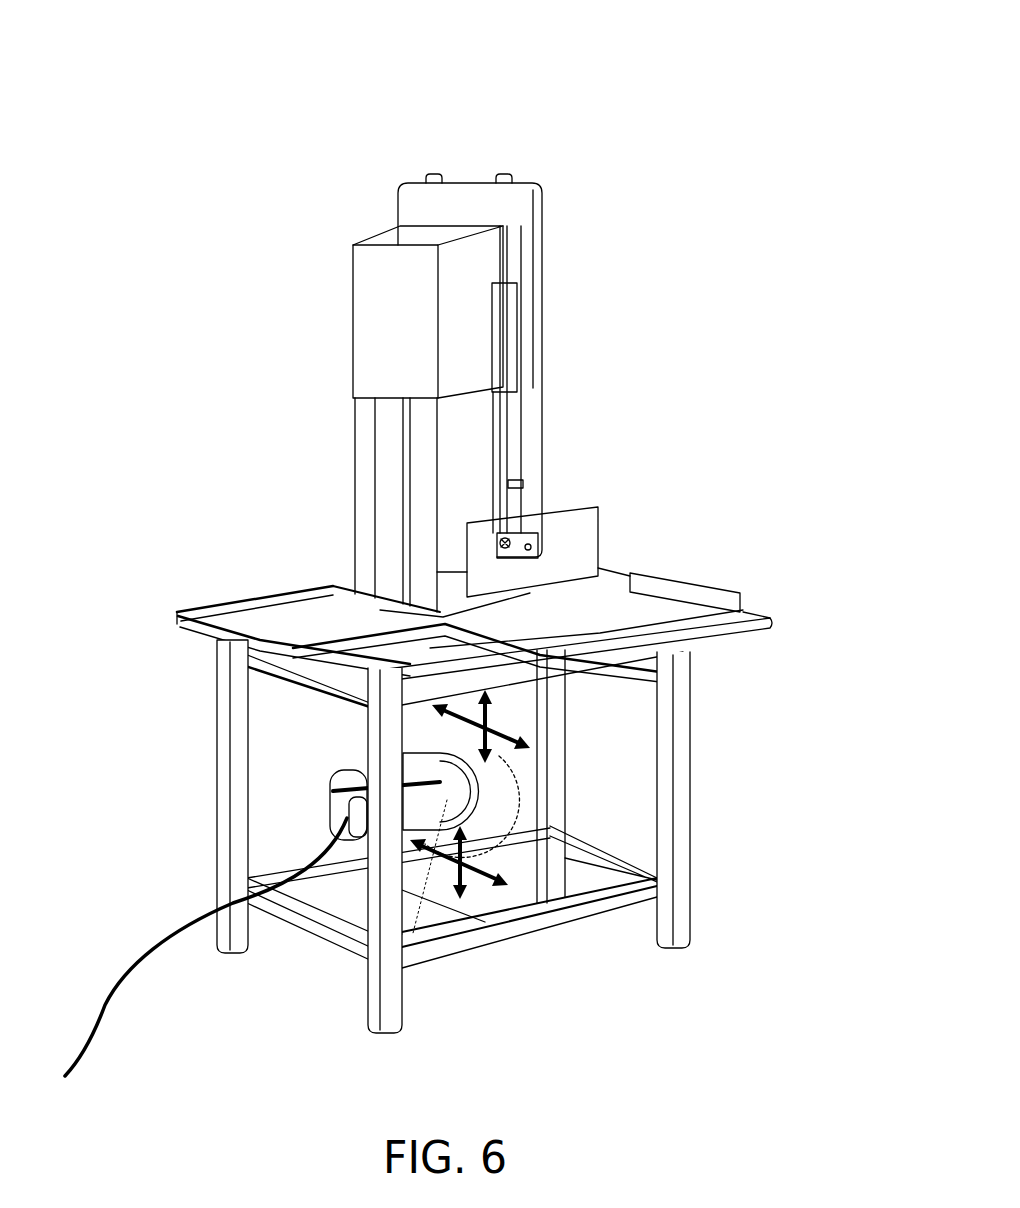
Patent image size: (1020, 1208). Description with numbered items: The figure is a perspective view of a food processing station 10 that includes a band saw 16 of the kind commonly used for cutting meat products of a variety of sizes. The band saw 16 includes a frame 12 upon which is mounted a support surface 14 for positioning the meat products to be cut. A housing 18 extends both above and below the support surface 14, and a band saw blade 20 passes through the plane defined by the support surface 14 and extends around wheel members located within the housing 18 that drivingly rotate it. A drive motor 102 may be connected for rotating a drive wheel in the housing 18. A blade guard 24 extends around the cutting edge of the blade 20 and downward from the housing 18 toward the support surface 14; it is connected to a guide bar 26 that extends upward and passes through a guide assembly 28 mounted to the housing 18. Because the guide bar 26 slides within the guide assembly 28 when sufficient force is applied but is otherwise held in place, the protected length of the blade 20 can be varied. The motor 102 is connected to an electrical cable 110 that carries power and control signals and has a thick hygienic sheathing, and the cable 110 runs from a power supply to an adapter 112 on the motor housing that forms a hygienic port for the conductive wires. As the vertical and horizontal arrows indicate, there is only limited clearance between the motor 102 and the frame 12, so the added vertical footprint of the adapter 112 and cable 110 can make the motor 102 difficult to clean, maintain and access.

The food processing station 10 is at (680, 124).
The frame 12 is at (693, 762).
The support surface 14 is at (762, 594).
The band saw 16 is at (374, 208).
The housing 18 is at (567, 761).
The band saw blade 20 is at (553, 567).
The blade guard 24 is at (546, 422).
The guide bar 26 is at (513, 483).
The guide assembly 28 is at (497, 346).
The drive motor 102 is at (333, 790).
The electrical cable 110 is at (80, 1072).
The adapter 112 is at (393, 953).